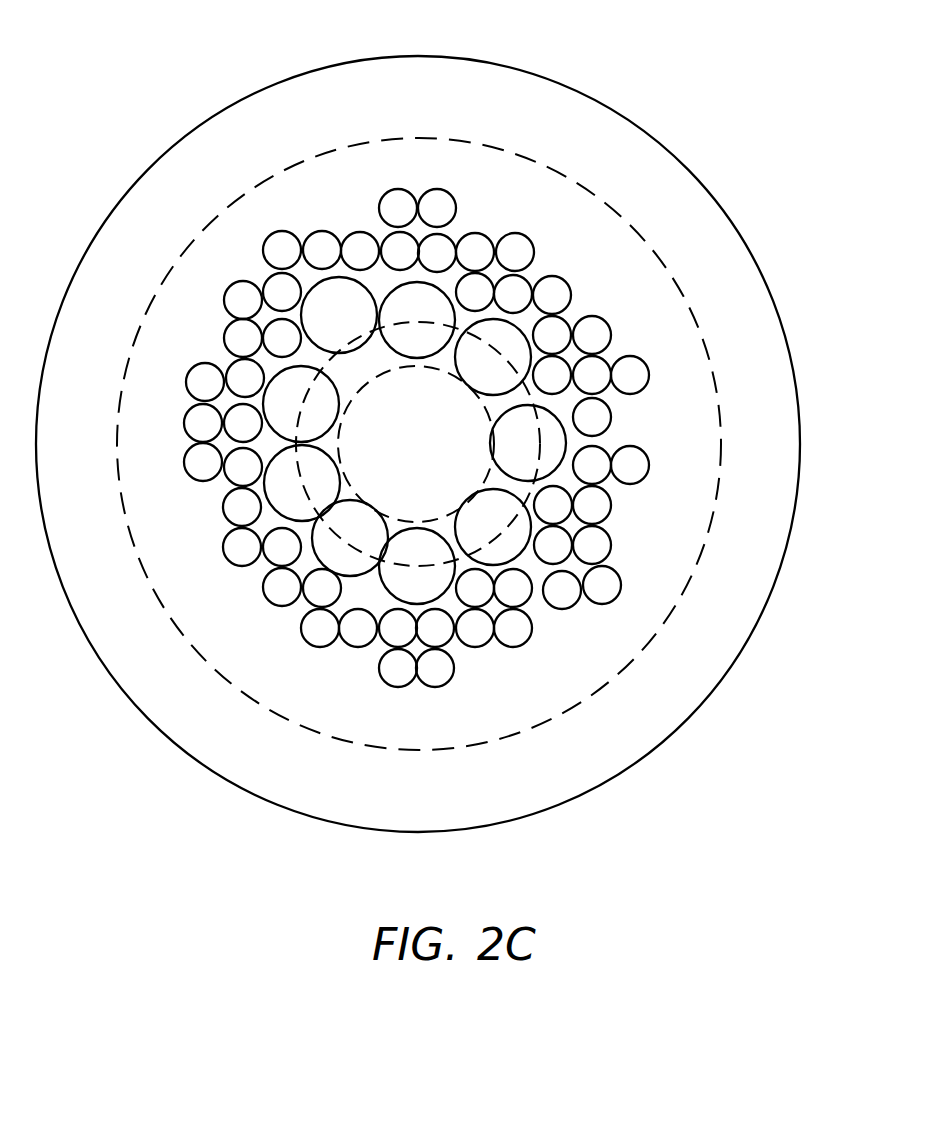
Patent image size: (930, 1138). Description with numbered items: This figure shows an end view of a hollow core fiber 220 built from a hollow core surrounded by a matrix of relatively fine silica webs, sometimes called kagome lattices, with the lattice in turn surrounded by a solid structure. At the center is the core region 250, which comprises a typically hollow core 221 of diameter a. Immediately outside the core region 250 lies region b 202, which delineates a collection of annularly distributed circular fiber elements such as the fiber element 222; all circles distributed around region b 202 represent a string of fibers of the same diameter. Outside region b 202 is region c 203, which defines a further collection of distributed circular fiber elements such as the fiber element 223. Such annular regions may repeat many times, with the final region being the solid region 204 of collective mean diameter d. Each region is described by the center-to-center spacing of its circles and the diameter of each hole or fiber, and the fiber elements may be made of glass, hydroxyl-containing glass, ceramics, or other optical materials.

The hollow core fiber 220 is at (700, 740).
The solid region 204 is at (148, 673).
The region c 203 is at (191, 226).
The core region 250 is at (407, 413).
The hollow core 221 is at (439, 356).
The region b 202 is at (505, 341).
The circular fiber element 222 is at (333, 296).
The circular fiber element 223 is at (595, 333).